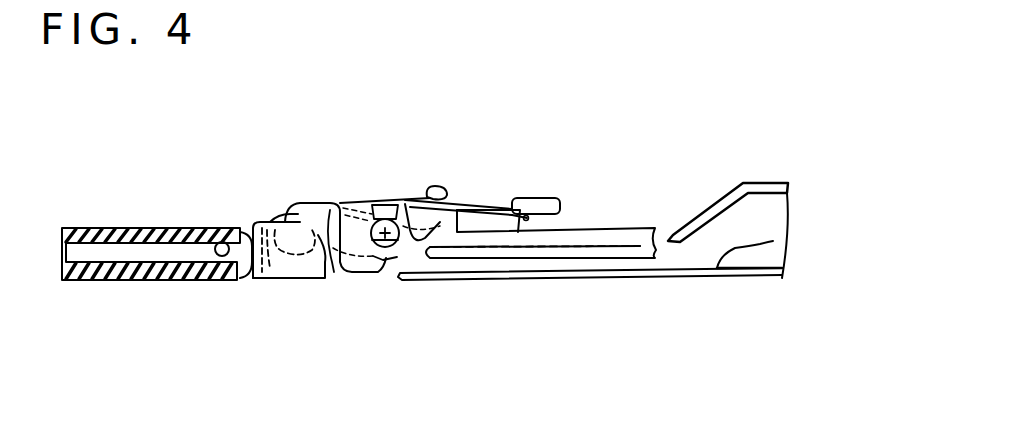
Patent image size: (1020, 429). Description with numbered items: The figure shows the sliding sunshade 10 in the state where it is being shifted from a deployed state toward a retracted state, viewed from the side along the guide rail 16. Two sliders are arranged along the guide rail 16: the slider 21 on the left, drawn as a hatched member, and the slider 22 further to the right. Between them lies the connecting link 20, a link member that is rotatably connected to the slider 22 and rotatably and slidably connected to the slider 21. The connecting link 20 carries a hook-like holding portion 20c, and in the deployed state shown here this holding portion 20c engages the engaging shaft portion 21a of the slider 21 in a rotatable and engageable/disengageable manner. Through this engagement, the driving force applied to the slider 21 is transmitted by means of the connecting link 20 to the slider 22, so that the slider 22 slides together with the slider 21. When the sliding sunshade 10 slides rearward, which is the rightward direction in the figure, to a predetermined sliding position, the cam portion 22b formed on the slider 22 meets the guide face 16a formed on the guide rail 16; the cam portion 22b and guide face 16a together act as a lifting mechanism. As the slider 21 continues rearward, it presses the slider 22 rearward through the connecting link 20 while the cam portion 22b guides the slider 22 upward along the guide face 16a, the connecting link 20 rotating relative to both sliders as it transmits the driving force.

The sliding sunshade 10 is at (197, 170).
The guide rail 16 is at (773, 241).
The guide face 16a is at (718, 202).
The connecting link 20 is at (332, 198).
The holding portion 20c is at (278, 210).
The slider 21 is at (105, 281).
The engaging shaft portion 21a is at (273, 212).
The slider 22 is at (608, 238).
The cam portion 22b is at (443, 198).